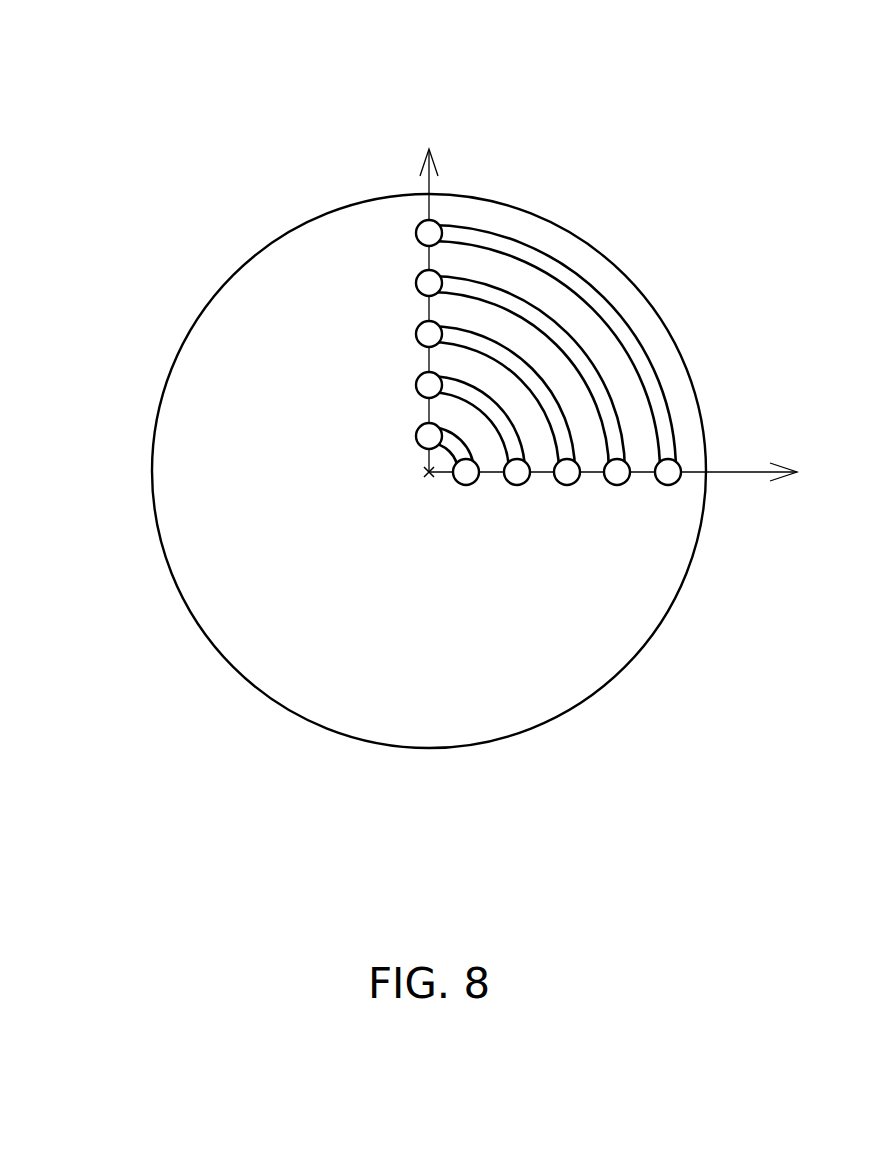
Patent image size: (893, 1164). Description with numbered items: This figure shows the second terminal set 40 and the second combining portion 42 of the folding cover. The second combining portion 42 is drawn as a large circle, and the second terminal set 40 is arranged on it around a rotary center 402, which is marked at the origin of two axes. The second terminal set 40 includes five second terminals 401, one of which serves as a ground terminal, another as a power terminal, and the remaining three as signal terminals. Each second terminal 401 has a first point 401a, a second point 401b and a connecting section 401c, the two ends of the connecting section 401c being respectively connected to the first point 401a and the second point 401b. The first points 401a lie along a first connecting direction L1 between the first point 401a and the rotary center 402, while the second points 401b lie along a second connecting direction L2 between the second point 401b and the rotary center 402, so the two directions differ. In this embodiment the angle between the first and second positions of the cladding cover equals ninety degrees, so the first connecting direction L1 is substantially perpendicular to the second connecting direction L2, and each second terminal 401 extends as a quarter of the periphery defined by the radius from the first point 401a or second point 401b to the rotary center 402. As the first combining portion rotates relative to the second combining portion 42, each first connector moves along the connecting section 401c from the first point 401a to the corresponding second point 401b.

The second terminal set 40 is at (172, 99).
The second terminal 401 is at (529, 294).
The first point 401a is at (436, 229).
The second point 401b is at (672, 470).
The connecting section 401c is at (585, 288).
The rotary center 402 is at (425, 472).
The second combining portion 42 is at (623, 618).
The first connecting direction L1 is at (431, 294).
The second connecting direction L2 is at (634, 472).